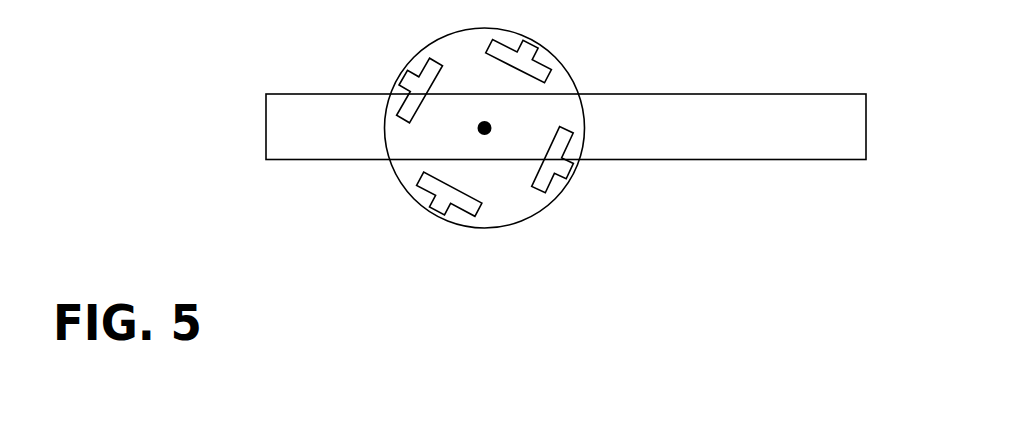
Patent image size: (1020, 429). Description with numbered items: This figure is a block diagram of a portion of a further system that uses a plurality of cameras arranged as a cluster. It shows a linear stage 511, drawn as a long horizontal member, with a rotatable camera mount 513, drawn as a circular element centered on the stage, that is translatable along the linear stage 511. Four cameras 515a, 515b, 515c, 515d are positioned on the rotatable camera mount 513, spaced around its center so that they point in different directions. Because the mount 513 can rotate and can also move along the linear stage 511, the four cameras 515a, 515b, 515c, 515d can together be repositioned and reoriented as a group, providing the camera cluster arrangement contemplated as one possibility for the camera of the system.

The linear stage 511 is at (732, 94).
The rotatable camera mount 513 is at (517, 223).
The camera 515a is at (532, 39).
The camera 515b is at (571, 172).
The camera 515c is at (436, 216).
The camera 515d is at (399, 80).